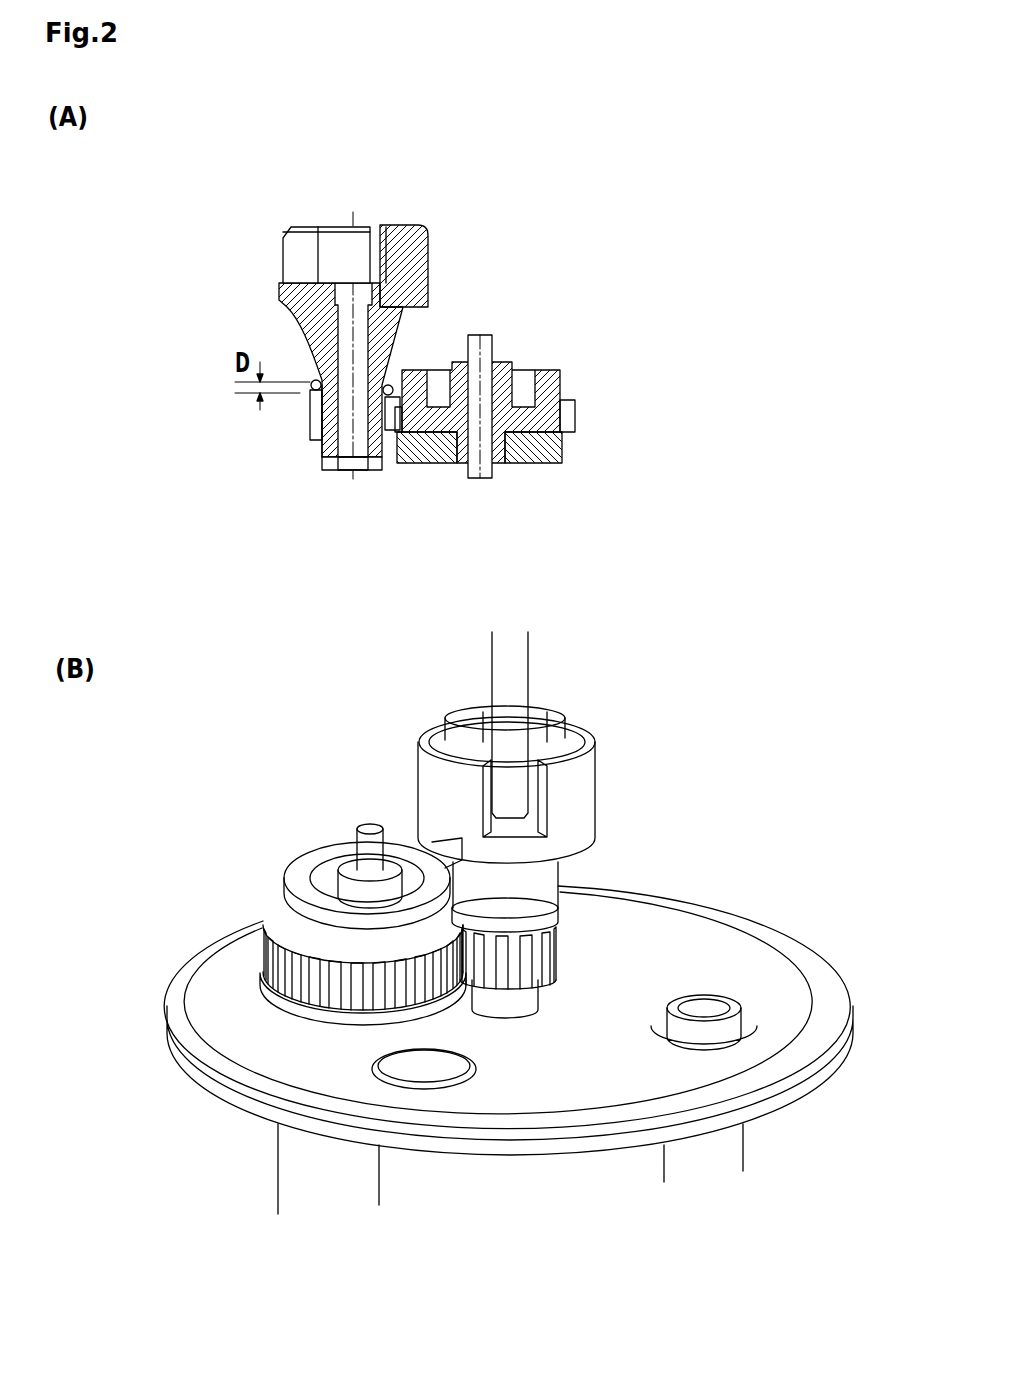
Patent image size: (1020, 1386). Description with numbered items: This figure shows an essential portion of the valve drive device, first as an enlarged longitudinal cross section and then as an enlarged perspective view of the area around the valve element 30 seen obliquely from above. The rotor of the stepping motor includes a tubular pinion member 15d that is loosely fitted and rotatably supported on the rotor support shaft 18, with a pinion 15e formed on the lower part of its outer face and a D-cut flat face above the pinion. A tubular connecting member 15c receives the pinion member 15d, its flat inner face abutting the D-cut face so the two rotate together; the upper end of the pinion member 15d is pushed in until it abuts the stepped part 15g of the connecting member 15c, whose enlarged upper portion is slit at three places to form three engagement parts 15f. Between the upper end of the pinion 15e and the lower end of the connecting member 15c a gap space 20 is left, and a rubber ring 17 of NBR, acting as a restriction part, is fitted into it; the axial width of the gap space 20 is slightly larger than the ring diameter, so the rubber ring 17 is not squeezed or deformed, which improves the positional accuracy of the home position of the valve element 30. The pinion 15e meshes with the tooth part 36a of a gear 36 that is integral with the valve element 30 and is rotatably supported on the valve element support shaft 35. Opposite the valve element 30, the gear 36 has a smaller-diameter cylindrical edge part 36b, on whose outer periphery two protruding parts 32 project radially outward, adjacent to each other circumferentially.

The connecting member 15c is at (300, 312).
The pinion member 15d is at (320, 447).
The pinion 15e is at (313, 422).
The engagement parts 15f is at (417, 267).
The stepped part 15g is at (307, 285).
The rubber ring 17 is at (482, 333).
The rotor support shaft 18 is at (513, 673).
The gap space 20 is at (301, 396).
The valve element 30 is at (548, 445).
The protruding parts 32 is at (452, 933).
The valve element support shaft 35 is at (375, 848).
The gear 36 is at (527, 390).
The tooth part 36a is at (263, 923).
The cylindrical edge part 36b is at (273, 883).